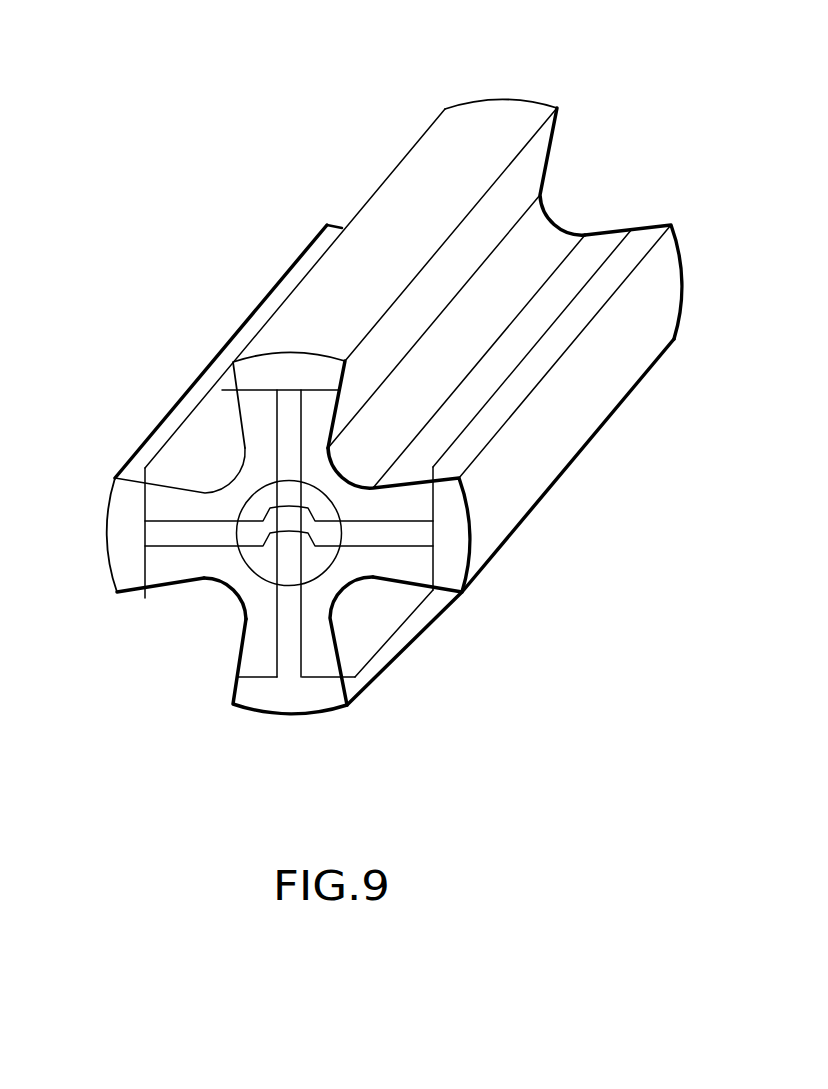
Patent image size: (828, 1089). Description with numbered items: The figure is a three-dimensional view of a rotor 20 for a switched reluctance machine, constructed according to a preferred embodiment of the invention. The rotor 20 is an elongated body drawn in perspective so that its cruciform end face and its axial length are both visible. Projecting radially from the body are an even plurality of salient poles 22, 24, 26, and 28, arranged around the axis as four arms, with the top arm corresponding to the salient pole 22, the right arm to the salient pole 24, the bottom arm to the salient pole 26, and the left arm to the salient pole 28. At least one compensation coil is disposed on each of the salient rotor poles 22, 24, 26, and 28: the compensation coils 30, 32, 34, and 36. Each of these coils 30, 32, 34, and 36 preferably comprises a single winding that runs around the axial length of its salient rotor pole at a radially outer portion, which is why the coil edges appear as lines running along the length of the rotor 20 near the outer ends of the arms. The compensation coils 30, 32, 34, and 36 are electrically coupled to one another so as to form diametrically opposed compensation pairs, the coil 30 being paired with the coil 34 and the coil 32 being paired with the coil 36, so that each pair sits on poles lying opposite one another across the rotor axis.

The rotor 20 is at (219, 305).
The salient pole 22 is at (481, 107).
The salient pole 24 is at (538, 475).
The salient pole 26 is at (293, 715).
The salient pole 28 is at (120, 533).
The compensation coil 30 is at (553, 140).
The compensation coil 32 is at (652, 228).
The compensation coil 34 is at (236, 671).
The compensation coil 36 is at (145, 592).